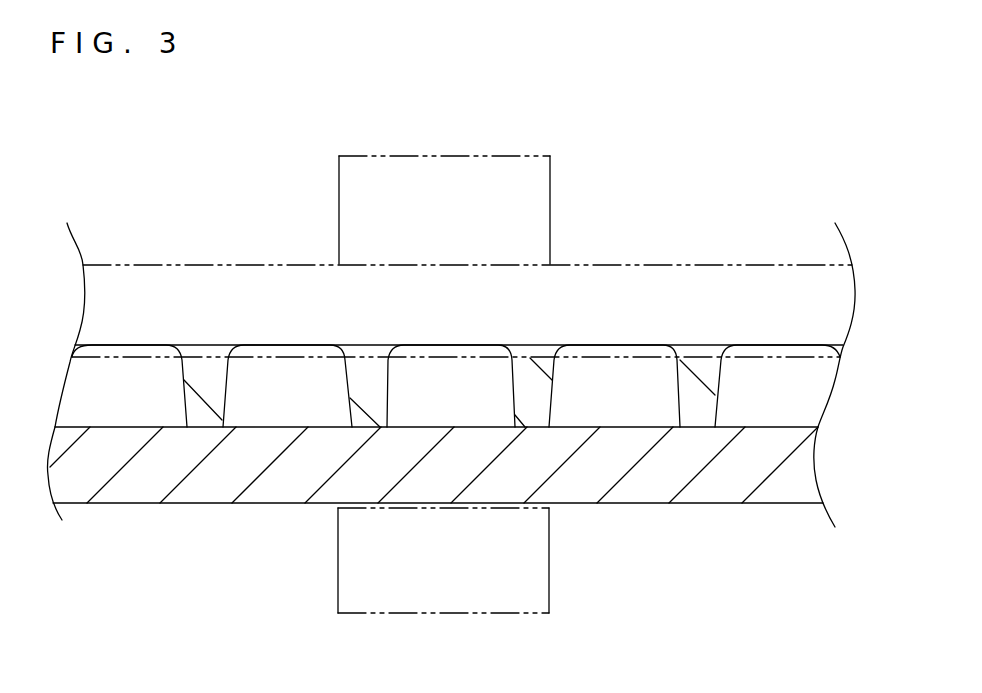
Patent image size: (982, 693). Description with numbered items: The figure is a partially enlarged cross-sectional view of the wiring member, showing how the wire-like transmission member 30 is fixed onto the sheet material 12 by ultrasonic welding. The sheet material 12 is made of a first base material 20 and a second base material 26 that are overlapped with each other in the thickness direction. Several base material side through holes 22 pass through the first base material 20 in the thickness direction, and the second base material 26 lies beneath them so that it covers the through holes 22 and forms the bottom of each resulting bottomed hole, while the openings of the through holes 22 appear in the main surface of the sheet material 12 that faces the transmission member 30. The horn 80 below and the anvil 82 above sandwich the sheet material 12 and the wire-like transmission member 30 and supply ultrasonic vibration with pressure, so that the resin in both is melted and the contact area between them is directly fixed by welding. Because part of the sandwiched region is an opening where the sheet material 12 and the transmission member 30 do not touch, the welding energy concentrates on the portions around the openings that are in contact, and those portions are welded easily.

The sheet material 12 is at (135, 509).
The first base material 20 is at (693, 415).
The base material side through hole 22 is at (225, 405).
The second base material 26 is at (743, 493).
The wire-like transmission member 30 is at (689, 265).
The horn 80 is at (475, 602).
The anvil 82 is at (468, 165).